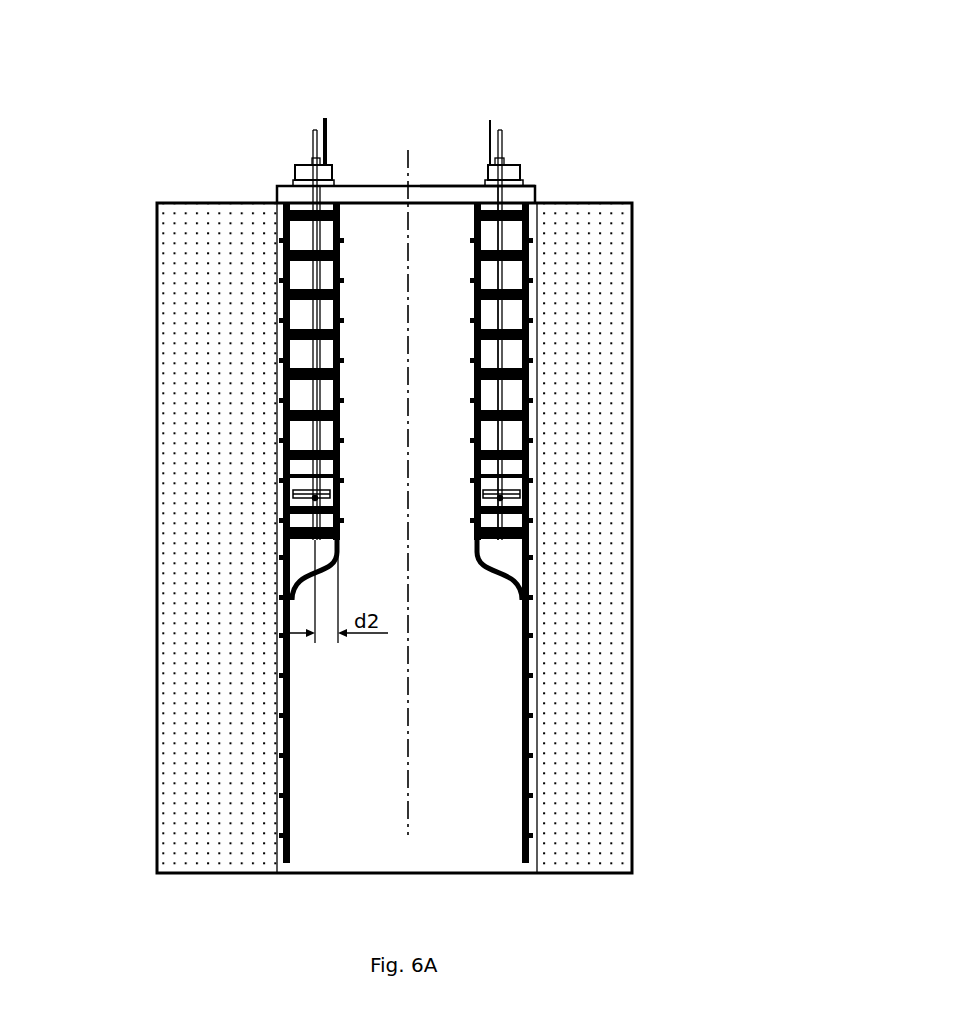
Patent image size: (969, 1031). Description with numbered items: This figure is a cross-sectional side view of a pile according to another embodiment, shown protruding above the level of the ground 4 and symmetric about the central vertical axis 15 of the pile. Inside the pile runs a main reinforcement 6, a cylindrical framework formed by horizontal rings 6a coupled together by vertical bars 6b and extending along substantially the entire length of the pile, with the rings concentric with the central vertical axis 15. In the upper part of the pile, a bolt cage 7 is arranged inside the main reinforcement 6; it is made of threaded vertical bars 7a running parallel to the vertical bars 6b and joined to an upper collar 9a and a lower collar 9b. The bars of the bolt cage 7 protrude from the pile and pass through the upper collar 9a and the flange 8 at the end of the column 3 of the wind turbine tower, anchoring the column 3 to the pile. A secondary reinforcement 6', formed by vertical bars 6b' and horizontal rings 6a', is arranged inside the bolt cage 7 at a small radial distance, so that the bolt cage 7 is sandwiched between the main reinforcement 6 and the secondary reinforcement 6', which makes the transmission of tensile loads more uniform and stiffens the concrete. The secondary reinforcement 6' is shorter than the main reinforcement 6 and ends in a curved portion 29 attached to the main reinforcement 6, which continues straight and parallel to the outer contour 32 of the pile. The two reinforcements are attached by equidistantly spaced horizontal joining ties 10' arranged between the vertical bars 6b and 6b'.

The column 3 is at (492, 118).
The ground 4 is at (613, 202).
The main reinforcement 6 is at (308, 173).
The secondary reinforcement 6' is at (573, 150).
The horizontal rings 6a is at (202, 426).
The horizontal rings 6a' is at (606, 353).
The vertical bars 6b is at (200, 470).
The vertical bars 6b' is at (619, 383).
The bolt cage 7 is at (313, 137).
The vertical bars 7a is at (320, 352).
The flange 8 is at (523, 175).
The upper collar 9a is at (293, 182).
The lower collar 9b is at (530, 485).
The joining ties 10' is at (408, 374).
The central vertical axis 15 is at (407, 775).
The curved portion 29 is at (497, 567).
The outer contour 32 is at (533, 698).